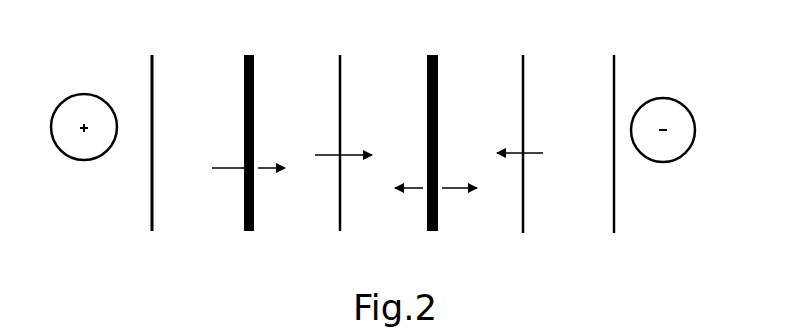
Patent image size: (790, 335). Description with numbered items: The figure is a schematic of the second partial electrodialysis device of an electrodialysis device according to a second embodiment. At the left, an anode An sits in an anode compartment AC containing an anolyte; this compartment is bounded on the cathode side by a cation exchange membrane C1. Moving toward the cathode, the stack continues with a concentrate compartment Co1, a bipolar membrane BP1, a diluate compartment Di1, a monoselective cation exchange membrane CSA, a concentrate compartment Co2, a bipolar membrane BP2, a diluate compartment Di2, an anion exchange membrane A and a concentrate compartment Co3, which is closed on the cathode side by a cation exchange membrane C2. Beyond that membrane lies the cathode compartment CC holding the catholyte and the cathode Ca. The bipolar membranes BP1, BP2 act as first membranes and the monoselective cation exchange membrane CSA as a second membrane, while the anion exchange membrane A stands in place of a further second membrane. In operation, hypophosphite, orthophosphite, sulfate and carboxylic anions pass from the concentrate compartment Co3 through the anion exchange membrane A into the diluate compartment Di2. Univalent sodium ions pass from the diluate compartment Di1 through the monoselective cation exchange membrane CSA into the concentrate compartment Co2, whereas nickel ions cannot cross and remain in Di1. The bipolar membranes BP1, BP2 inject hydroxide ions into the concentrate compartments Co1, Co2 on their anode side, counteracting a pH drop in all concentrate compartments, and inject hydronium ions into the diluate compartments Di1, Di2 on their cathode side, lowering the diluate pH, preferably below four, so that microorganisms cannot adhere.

The anode An is at (85, 95).
The anode compartment AC is at (94, 128).
The cation exchange membrane C1 is at (155, 124).
The concentrate compartment Co1 is at (206, 141).
The bipolar membrane BP1 is at (249, 128).
The diluate compartment Di1 is at (292, 156).
The monoselective cation exchange membrane CSA is at (335, 124).
The concentrate compartment Co2 is at (354, 114).
The bipolar membrane BP2 is at (432, 129).
The diluate compartment Di2 is at (441, 133).
The anion exchange membrane A is at (521, 129).
The concentrate compartment Co3 is at (537, 149).
The cation exchange membrane C2 is at (610, 125).
The cathode Ca is at (663, 98).
The cathode compartment CC is at (659, 128).